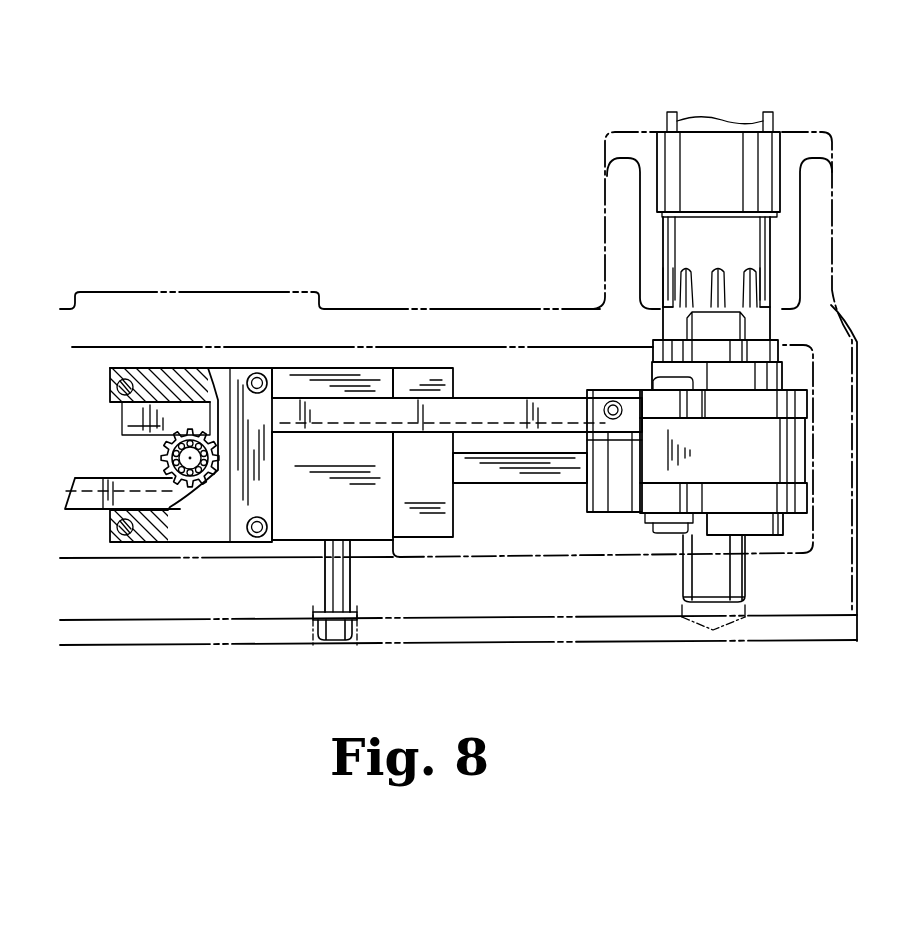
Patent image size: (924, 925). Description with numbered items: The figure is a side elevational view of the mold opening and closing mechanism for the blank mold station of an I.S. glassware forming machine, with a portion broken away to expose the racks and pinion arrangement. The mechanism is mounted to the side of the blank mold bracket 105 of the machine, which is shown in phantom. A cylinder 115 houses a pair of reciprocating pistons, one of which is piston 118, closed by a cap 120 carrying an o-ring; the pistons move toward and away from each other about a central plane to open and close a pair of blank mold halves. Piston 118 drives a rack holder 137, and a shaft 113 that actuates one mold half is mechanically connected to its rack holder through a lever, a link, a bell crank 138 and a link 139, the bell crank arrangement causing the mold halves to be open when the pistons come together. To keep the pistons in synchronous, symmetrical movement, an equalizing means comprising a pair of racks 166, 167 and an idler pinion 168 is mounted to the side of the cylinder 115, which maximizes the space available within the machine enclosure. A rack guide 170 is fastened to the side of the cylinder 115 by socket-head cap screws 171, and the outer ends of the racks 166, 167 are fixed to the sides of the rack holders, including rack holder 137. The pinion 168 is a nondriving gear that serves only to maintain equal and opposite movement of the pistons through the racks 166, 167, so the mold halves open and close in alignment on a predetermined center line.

The blank mold bracket 105 is at (524, 308).
The shaft 113 is at (772, 247).
The cylinder 115 is at (365, 542).
The piston 118 is at (524, 484).
The cap 120 is at (456, 510).
The rack holder 137 is at (612, 515).
The bell crank 138 is at (812, 402).
The link 139 is at (806, 456).
The rack 166 is at (103, 510).
The rack 167 is at (541, 398).
The idler pinion 168 is at (172, 479).
The rack guide 170 is at (233, 543).
The socket-head cap screws 171 is at (265, 518).